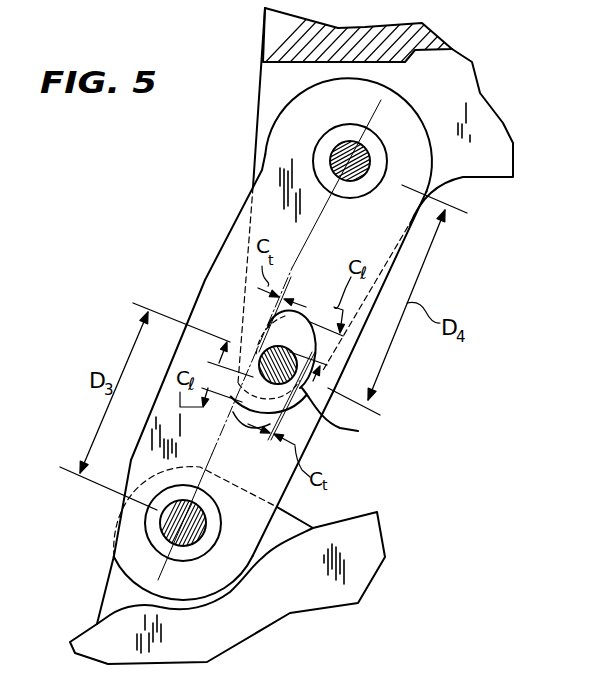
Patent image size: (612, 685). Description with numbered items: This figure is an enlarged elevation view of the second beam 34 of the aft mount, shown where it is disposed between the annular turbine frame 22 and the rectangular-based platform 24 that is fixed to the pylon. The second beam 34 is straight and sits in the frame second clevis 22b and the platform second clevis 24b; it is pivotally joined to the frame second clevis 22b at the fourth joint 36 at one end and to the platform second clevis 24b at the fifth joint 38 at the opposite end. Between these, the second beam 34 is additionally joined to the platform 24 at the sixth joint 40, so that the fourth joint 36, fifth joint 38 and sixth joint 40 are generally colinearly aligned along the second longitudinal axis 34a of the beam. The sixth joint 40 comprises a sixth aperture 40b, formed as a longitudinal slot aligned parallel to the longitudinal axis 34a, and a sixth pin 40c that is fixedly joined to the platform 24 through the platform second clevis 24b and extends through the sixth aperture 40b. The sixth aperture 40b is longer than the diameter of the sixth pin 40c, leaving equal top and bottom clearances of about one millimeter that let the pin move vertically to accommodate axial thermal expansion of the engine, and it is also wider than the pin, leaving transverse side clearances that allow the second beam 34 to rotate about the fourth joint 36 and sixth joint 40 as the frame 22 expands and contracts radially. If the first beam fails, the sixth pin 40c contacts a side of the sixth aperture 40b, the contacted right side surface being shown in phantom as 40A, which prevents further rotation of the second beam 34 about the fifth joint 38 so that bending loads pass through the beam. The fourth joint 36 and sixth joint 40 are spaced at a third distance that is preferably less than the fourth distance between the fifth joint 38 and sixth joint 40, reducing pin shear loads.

The turbine frame 22 is at (82, 624).
The frame second clevis 22b is at (113, 558).
The platform 24 is at (262, 40).
The platform second clevis 24b is at (258, 108).
The second beam 34 is at (226, 252).
The second longitudinal axis 34a is at (367, 110).
The fourth joint 36 is at (212, 532).
The fifth joint 38 is at (378, 153).
The sixth joint 40 is at (228, 328).
The right side surface of the sixth aperture 40A is at (306, 318).
The sixth aperture 40b is at (238, 430).
The sixth pin 40c is at (358, 431).